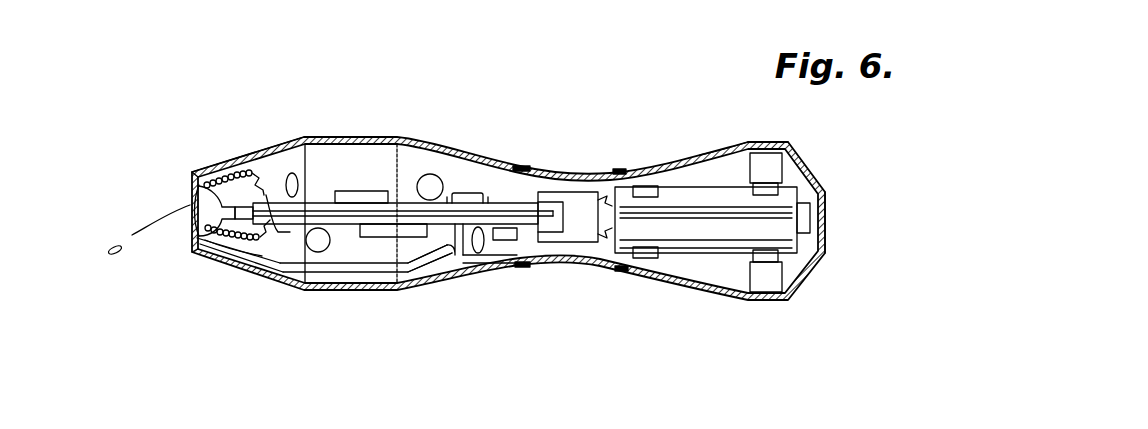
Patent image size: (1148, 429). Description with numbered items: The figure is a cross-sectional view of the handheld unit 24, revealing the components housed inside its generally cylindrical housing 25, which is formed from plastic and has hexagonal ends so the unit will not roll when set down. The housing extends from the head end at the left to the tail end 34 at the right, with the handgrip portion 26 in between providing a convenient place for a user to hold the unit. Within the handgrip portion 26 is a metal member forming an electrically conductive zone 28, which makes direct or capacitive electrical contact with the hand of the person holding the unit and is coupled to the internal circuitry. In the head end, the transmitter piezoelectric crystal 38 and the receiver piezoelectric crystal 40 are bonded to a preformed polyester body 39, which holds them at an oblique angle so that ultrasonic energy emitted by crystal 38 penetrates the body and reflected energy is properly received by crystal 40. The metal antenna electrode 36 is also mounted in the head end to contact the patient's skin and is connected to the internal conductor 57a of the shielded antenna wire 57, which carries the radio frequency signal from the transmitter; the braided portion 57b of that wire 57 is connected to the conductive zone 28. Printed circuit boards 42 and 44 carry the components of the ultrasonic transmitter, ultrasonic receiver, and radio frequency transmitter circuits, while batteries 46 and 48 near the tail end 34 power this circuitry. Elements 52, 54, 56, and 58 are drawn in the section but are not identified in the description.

The handheld unit 24 is at (768, 142).
The housing 25 is at (685, 160).
The handgrip portion 26 is at (547, 170).
The electrically conductive zone 28 is at (521, 166).
The tail end 34 is at (827, 205).
The metal antenna electrode 36 is at (190, 178).
The piezoelectric crystal 38 is at (225, 175).
The preformed polyester body 39 is at (190, 188).
The piezoelectric crystal 40 is at (212, 242).
The printed circuit board 42 is at (318, 205).
The printed circuit board 44 is at (288, 233).
The battery 46 is at (788, 195).
The battery 48 is at (785, 250).
The coupling block 52 is at (585, 192).
The body member 54 is at (580, 245).
The upper spring 56 is at (234, 178).
The shielded antenna wire 57 is at (347, 267).
The internal conductor 57a is at (200, 240).
The braided portion 57b is at (488, 252).
The lower spring 58 is at (247, 238).